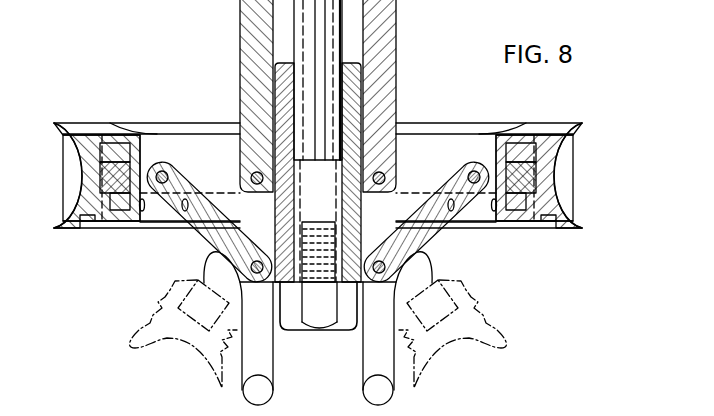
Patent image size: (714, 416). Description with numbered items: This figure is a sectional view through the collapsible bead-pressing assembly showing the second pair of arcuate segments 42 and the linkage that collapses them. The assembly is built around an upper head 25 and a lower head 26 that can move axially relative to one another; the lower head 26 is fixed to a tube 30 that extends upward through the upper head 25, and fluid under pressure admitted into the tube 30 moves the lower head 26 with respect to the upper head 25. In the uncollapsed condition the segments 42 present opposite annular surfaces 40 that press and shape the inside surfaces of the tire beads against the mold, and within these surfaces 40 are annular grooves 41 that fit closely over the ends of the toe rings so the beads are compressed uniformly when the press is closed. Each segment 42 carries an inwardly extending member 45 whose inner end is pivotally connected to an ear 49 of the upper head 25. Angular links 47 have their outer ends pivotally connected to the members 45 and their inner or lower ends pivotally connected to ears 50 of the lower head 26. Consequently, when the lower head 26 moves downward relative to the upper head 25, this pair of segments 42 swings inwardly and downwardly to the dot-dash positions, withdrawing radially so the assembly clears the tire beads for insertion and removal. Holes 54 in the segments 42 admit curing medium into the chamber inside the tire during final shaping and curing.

The upper head 25 is at (381, 19).
The lower head 26 is at (343, 173).
The tube 30 is at (307, 117).
The annular surfaces 40 is at (558, 125).
The annular grooves 41 is at (545, 137).
The arcuate segments 42 is at (79, 163).
The inwardly extending members 45 is at (228, 165).
The angular links 47 is at (233, 238).
The ears 49 is at (247, 78).
The ears 50 is at (365, 245).
The holes 54 is at (142, 212).